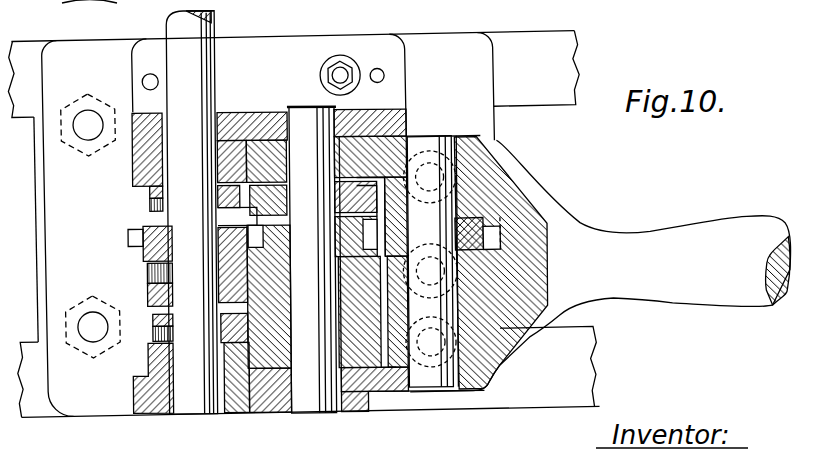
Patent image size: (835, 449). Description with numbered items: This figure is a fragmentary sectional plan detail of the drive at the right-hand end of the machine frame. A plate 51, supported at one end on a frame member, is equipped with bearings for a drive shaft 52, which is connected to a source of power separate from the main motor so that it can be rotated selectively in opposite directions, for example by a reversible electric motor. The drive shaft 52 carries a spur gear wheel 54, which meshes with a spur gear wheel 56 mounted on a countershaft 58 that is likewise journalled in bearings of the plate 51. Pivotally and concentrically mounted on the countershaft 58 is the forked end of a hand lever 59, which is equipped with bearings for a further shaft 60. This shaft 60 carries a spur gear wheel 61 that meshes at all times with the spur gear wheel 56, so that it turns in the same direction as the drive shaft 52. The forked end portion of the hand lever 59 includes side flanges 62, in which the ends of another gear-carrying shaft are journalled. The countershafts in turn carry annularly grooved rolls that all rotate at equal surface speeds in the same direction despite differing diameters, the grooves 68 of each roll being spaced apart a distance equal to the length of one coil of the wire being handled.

The plate 51 is at (462, 78).
The drive shaft 52 is at (216, 61).
The spur gear wheel 54 is at (128, 236).
The spur gear wheel 56 is at (257, 229).
The countershaft 58 is at (300, 118).
The hand lever 59 is at (557, 216).
The shaft 60 is at (437, 149).
The spur gear wheel 61 is at (492, 242).
The side flanges 62 is at (348, 146).
The grooves 68 is at (470, 207).